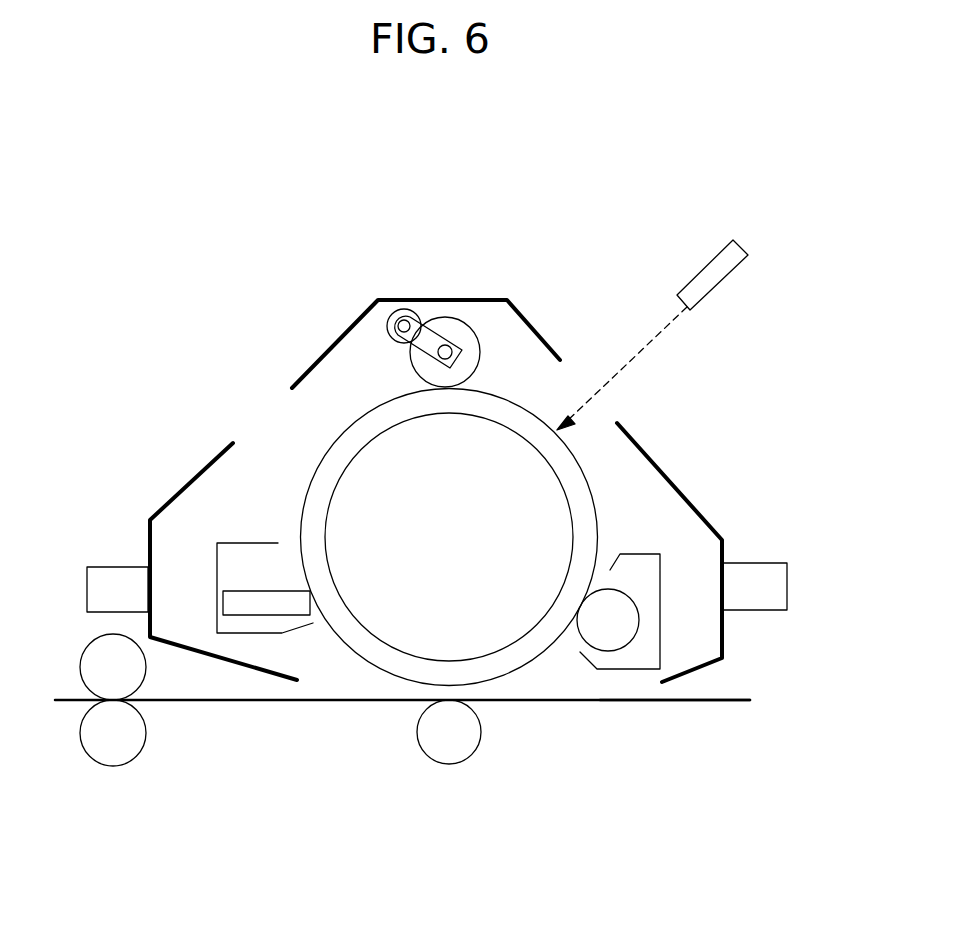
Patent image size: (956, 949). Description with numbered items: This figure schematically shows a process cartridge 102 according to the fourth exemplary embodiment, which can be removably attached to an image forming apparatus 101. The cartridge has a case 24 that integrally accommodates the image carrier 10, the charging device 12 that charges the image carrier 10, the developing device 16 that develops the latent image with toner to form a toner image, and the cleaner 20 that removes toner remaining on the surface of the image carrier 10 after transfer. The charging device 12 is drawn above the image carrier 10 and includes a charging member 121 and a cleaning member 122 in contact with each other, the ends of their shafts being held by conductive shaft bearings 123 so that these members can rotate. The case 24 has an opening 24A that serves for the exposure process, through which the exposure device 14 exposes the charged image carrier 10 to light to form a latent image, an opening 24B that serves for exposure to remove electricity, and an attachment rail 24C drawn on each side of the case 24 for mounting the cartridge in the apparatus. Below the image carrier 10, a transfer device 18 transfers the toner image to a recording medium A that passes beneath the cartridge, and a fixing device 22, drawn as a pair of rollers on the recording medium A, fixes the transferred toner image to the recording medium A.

The image forming apparatus 101 is at (538, 167).
The image carrier 10 is at (363, 417).
The charging device 12 is at (423, 313).
The charging member 121 is at (462, 333).
The cleaning member 122 is at (400, 313).
The conductive shaft bearings 123 is at (430, 343).
The exposure device 14 is at (715, 278).
The developing device 16 is at (640, 554).
The transfer device 18 is at (450, 752).
The cleaner 20 is at (244, 542).
The fixing device 22 is at (113, 756).
The case 24 is at (683, 488).
The opening 24A is at (580, 380).
The opening 24B is at (270, 413).
The attachment rail 24C is at (117, 567).
The process cartridge 102 is at (628, 427).
The recording medium A is at (650, 702).